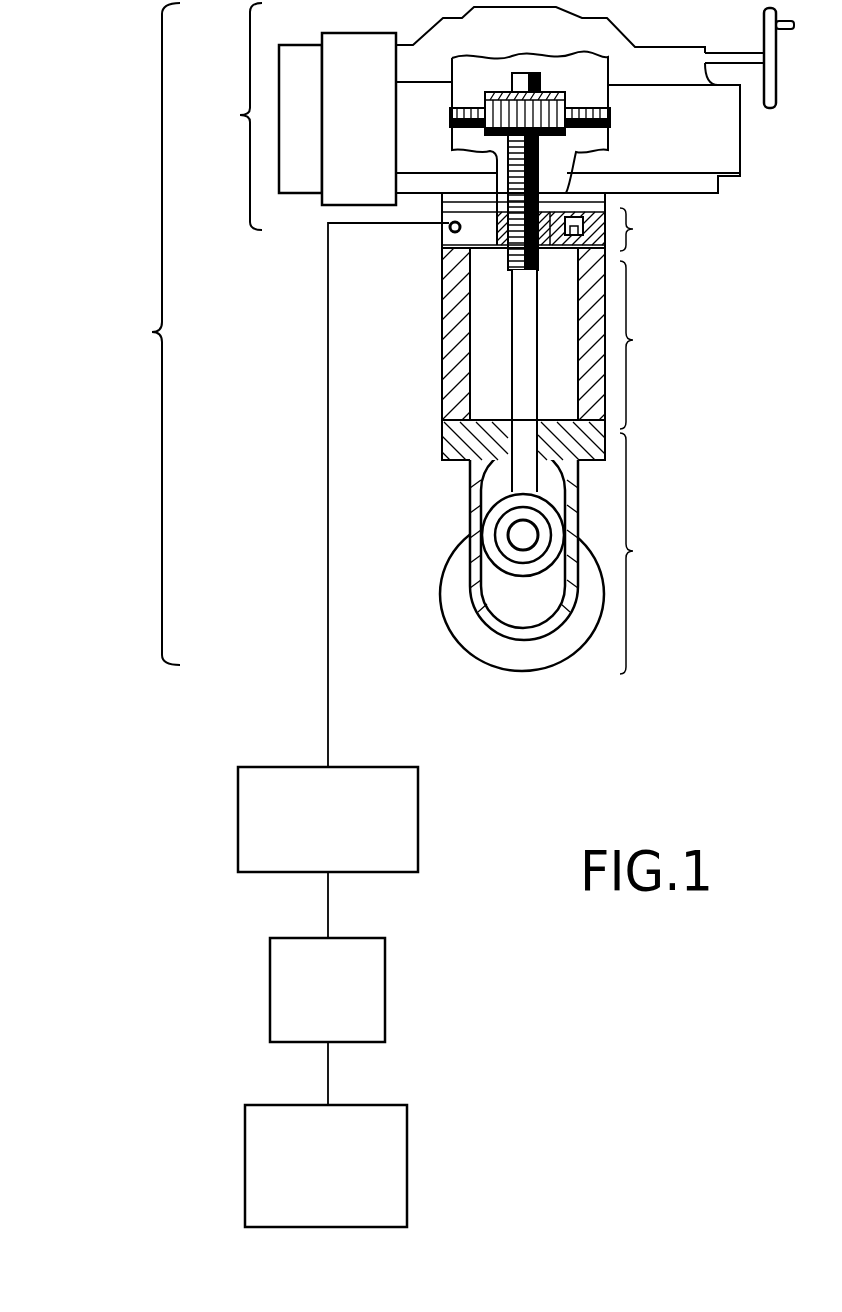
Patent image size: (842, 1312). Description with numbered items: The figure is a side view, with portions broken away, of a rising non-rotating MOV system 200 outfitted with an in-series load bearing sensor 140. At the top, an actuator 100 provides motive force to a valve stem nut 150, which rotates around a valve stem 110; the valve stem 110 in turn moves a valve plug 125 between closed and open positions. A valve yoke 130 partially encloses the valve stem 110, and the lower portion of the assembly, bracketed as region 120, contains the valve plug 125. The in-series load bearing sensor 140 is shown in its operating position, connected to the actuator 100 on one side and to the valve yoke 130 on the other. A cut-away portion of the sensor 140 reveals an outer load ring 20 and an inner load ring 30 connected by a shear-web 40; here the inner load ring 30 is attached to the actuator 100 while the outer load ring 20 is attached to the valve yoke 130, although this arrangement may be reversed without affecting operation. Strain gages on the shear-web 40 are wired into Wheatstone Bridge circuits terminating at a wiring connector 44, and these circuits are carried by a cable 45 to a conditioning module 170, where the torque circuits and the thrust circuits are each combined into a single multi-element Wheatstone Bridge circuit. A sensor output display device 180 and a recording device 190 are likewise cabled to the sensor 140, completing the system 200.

The outer load ring 20 is at (585, 200).
The inner load ring 30 is at (543, 203).
The shear-web 40 is at (570, 247).
The wiring connector 44 is at (448, 234).
The cable 45 is at (328, 382).
The actuator 100 is at (240, 115).
The valve stem 110 is at (525, 352).
The bottom coil assembly 120 is at (633, 551).
The valve plug 125 is at (523, 535).
The valve yoke 130 is at (633, 340).
The in-series load bearing sensor 140 is at (633, 229).
The valve stem nut 150 is at (484, 93).
The conditioning module 170 is at (418, 845).
The sensor output display device 180 is at (385, 990).
The recording device 190 is at (407, 1168).
The rising non-rotating MOV system 200 is at (152, 332).